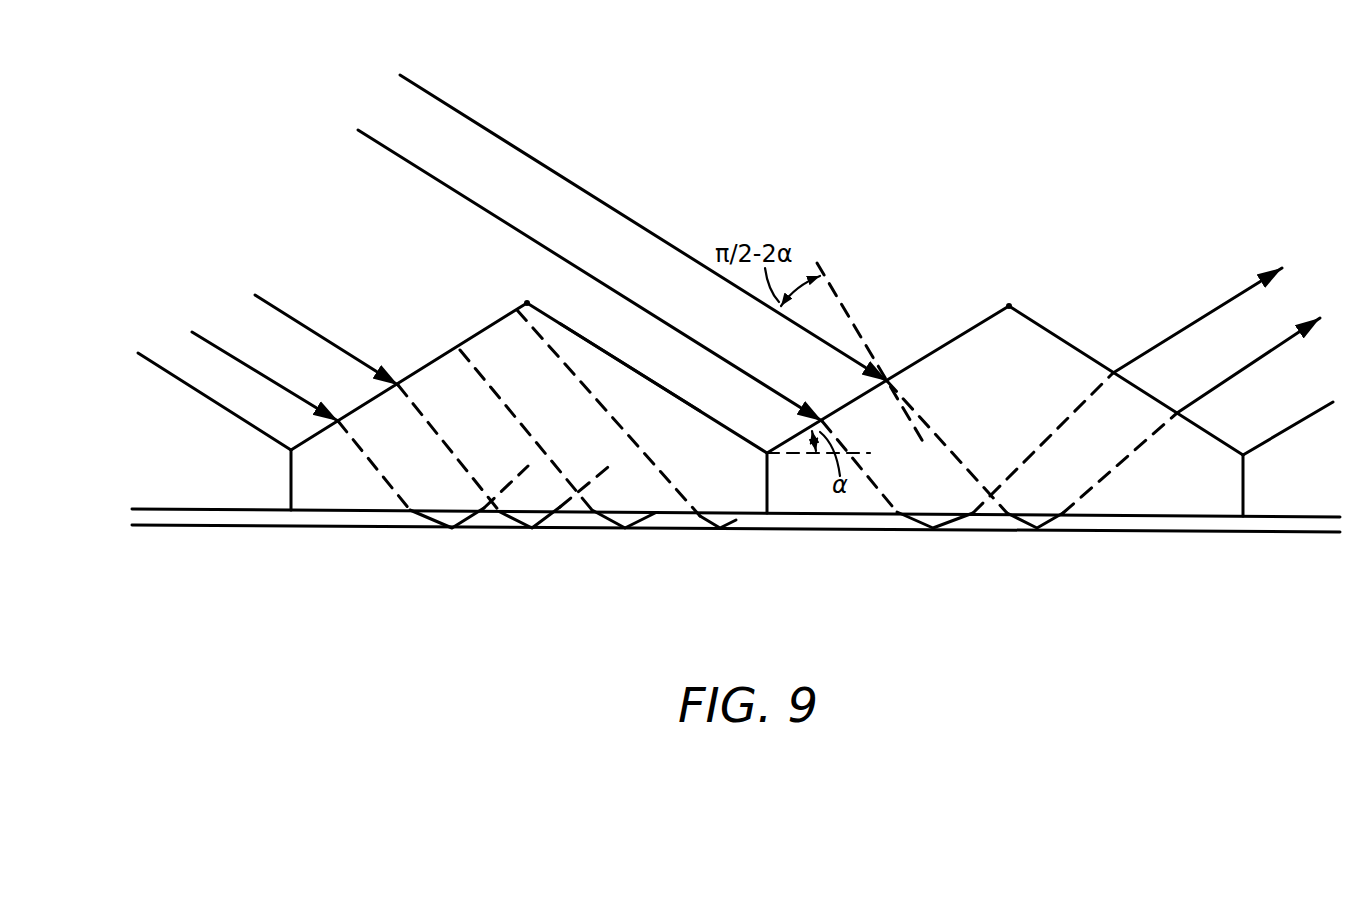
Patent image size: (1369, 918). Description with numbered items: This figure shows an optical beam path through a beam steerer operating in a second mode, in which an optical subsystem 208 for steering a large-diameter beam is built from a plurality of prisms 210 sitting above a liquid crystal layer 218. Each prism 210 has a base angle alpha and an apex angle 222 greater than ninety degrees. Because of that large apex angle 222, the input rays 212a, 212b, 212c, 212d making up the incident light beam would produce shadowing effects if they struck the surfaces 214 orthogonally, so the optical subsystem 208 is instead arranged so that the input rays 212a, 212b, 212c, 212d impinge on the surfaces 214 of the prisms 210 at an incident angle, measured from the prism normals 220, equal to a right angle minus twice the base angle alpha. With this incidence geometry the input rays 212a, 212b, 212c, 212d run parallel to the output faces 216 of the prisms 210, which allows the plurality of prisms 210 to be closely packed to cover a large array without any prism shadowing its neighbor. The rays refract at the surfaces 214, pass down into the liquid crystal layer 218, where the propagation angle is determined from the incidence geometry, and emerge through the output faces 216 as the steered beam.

The optical subsystem 208 is at (835, 235).
The prism 210 is at (676, 410).
The input ray 212a is at (240, 333).
The input ray 212b is at (288, 311).
The input ray 212c is at (417, 166).
The input ray 212d is at (457, 113).
The surface 214 is at (488, 326).
The output face 216 is at (627, 366).
The liquid crystal layer 218 is at (178, 517).
The prism normal 220 is at (842, 303).
The apex angle 222 is at (527, 303).